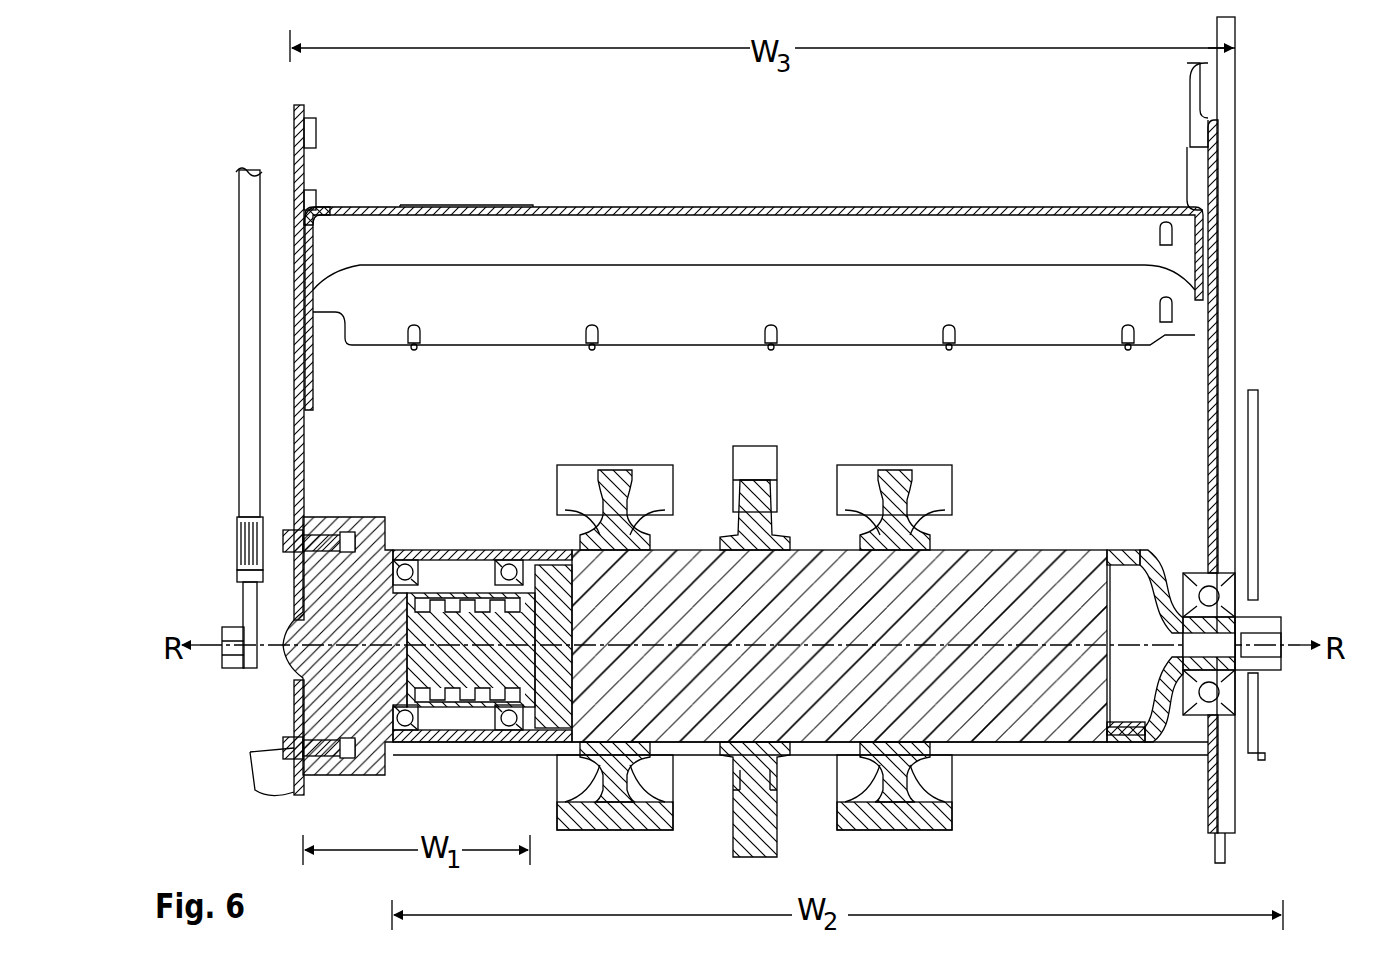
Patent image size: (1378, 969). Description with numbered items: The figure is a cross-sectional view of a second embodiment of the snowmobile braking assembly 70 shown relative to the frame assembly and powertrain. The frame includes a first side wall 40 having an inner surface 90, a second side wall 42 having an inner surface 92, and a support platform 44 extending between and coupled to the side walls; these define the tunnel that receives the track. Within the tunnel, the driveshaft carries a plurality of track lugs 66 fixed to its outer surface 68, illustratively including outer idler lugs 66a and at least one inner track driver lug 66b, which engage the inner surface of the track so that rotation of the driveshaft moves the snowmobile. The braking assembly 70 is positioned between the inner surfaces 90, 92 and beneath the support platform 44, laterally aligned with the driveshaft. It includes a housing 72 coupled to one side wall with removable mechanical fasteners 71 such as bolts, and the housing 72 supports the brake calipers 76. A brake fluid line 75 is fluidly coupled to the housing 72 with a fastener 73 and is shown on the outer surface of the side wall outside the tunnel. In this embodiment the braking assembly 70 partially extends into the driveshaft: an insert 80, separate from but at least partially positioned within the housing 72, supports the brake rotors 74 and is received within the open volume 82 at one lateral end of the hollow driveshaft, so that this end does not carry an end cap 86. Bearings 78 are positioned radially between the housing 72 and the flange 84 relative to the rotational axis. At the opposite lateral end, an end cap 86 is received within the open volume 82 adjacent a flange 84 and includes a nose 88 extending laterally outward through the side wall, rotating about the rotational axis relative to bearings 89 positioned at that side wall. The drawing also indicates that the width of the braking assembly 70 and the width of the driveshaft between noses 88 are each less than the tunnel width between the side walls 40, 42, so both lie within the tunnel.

The first side wall 40 is at (1240, 178).
The second side wall 42 is at (294, 160).
The support platform 44 is at (755, 207).
The track lugs 66 is at (940, 835).
The idler lugs 66a is at (615, 795).
The track driver lug 66b is at (752, 835).
The outer surface 68 is at (988, 742).
The braking assembly 70 is at (345, 512).
The fasteners 71 is at (305, 540).
The housing 72 is at (320, 683).
The fastener 73 is at (232, 625).
The brake rotor 74 is at (420, 685).
The brake fluid line 75 is at (239, 345).
The brake caliper 76 is at (490, 600).
The bearings 78 is at (403, 565).
The insert 80 is at (555, 572).
The open volume 82 is at (1150, 562).
The flange 84 is at (440, 552).
The end cap 86 is at (1205, 578).
The nose 88 is at (1285, 632).
The bearings 89 is at (1215, 690).
The inner surface 90 is at (1205, 130).
The inner surface 92 is at (310, 180).